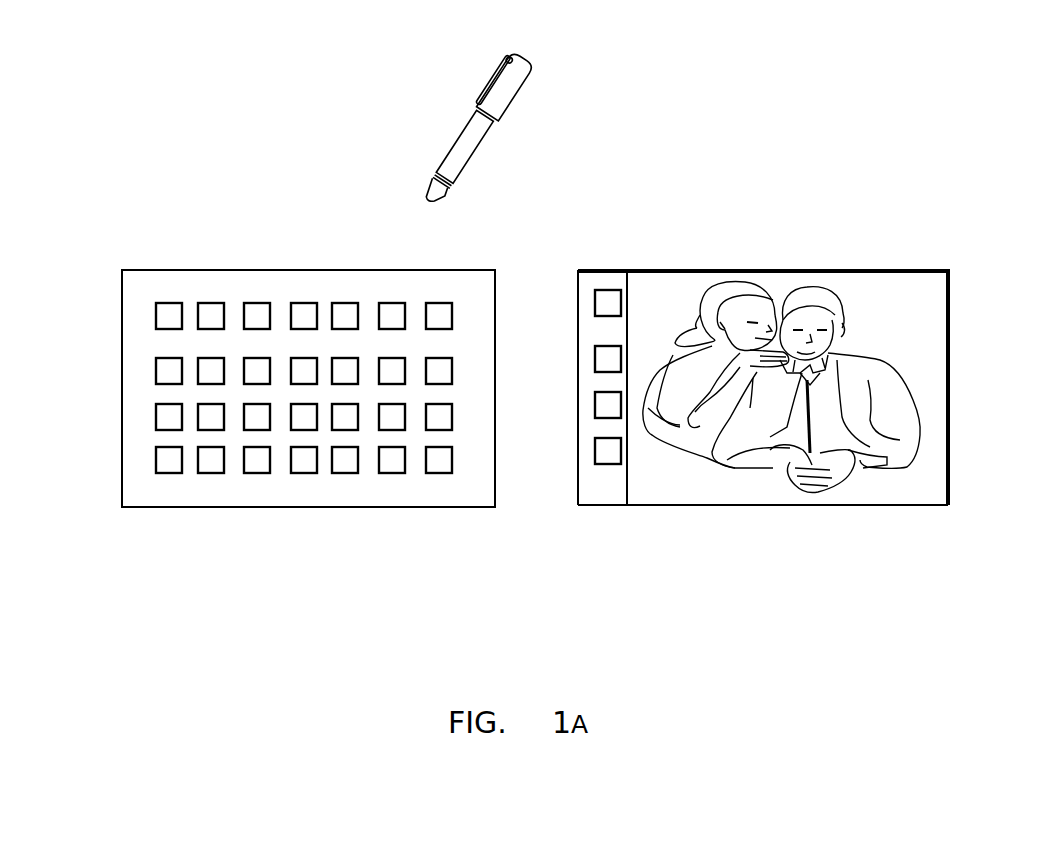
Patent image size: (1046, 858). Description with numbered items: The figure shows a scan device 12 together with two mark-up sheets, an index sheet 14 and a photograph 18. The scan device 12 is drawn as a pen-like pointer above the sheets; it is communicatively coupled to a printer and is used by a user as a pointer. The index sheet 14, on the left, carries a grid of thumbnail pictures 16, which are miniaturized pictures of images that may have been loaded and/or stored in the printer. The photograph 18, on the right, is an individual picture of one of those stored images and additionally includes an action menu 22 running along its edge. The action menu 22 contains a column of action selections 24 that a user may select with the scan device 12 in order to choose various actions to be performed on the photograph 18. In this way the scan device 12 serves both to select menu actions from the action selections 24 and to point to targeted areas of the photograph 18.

The scan device 12 is at (528, 74).
The index sheet 14 is at (118, 423).
The thumbnail pictures 16 is at (173, 323).
The photograph 18 is at (775, 268).
The action menu 22 is at (598, 476).
The action selections 24 is at (603, 303).